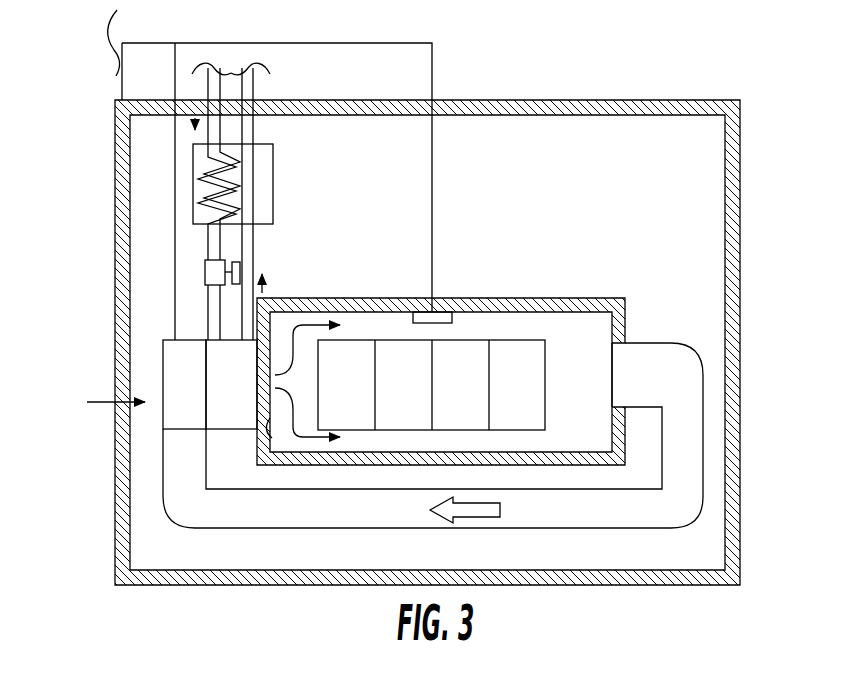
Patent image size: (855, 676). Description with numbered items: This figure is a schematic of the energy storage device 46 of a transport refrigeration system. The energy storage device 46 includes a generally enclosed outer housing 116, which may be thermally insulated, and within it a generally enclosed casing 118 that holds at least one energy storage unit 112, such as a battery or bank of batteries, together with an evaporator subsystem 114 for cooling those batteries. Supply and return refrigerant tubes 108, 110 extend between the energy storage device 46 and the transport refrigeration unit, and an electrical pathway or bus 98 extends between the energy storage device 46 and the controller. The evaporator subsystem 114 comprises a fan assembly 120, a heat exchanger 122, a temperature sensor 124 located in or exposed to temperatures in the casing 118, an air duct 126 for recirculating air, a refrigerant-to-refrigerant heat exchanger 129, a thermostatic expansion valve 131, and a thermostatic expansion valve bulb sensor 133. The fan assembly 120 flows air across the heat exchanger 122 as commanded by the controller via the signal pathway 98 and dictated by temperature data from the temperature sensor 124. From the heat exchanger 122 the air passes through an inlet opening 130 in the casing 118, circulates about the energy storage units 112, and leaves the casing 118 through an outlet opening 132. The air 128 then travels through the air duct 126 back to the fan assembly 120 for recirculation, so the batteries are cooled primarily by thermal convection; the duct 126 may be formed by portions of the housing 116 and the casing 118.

The energy storage device 46 is at (621, 60).
The electrical pathway or bus 98 is at (153, 43).
The supply refrigerant tube 108 is at (212, 87).
The return refrigerant tube 110 is at (247, 88).
The energy storage unit 112 is at (362, 395).
The evaporator subsystem 114 is at (99, 402).
The outer housing 116 is at (548, 585).
The casing 118 is at (625, 310).
The fan assembly 120 is at (200, 403).
The heat exchanger 122 is at (249, 403).
The temperature sensor 124 is at (452, 322).
The air duct 126 is at (548, 529).
The air flow arrow 128 is at (500, 506).
The refrigerant-to-refrigerant heat exchanger 129 is at (273, 173).
The inlet opening 130 is at (272, 425).
The thermostatic expansion valve 131 is at (203, 270).
The outlet opening 132 is at (612, 383).
The thermostatic expansion valve bulb sensor 133 is at (240, 266).